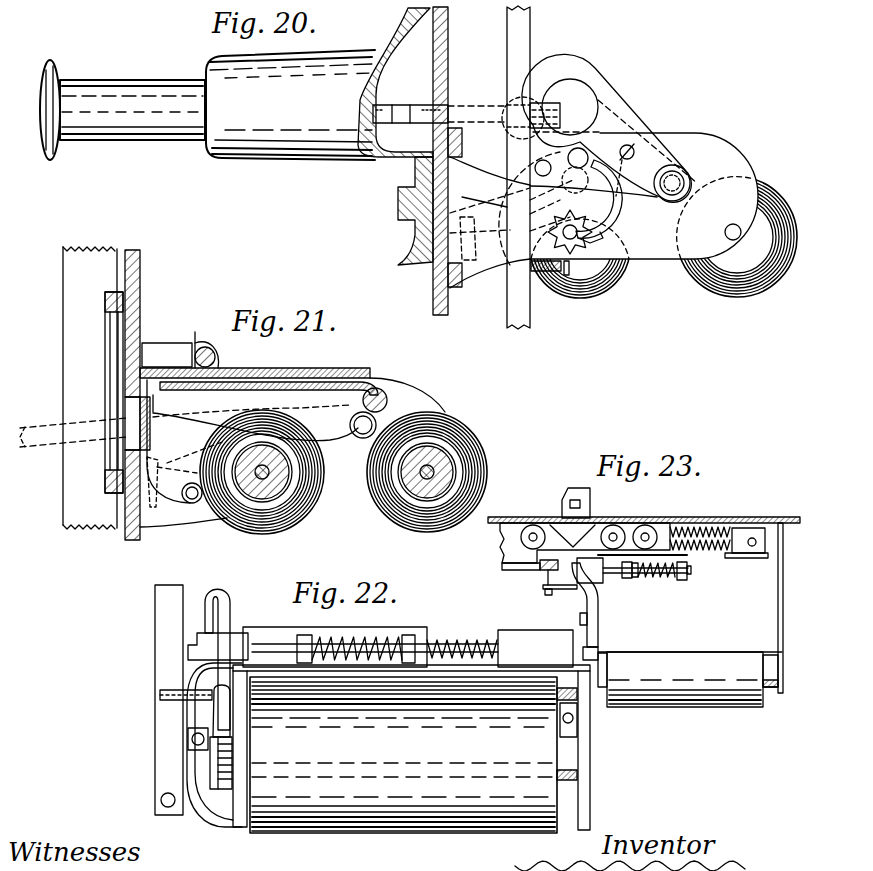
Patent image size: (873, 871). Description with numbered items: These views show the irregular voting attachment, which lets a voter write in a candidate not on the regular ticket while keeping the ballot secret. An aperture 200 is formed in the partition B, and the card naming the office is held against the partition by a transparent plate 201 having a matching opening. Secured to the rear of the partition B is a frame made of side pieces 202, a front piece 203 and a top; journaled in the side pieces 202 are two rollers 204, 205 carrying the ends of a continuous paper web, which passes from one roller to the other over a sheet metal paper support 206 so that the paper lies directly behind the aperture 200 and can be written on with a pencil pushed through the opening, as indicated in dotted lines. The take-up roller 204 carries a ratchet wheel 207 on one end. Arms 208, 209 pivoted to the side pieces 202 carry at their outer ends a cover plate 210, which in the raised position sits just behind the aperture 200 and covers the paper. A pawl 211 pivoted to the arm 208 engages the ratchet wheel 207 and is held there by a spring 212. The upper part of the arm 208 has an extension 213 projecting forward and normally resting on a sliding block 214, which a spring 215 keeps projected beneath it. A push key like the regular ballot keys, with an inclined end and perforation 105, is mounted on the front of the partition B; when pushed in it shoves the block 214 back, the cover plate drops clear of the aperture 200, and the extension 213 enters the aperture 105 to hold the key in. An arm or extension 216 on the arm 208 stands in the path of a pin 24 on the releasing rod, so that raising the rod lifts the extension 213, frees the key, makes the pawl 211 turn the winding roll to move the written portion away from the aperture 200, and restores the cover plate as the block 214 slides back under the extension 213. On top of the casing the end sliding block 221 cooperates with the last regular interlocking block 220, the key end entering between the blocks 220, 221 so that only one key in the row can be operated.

In FIG. 20, the projection 24 is at (518, 167).
In FIG. 22, the projection 24 is at (161, 800).
In FIG. 23, the projection 24 is at (546, 579).
In FIG. 20, the aperture 105 is at (404, 105).
In FIG. 23, the aperture 105 is at (581, 503).
In FIG. 21, the aperture 200 is at (130, 404).
In FIG. 21, the transparent plate 201 is at (110, 356).
In FIG. 20, the side pieces 202 is at (722, 146).
In FIG. 21, the side pieces 202 is at (415, 390).
In FIG. 22, the side pieces 202 is at (589, 751).
In FIG. 21, the front piece 203 is at (255, 365).
In FIG. 22, the front piece 203 is at (532, 668).
In FIG. 20, the take-up roller 204 is at (572, 290).
In FIG. 21, the take-up roller 204 is at (255, 503).
In FIG. 20, the roller 205 is at (716, 287).
In FIG. 21, the roller 205 is at (408, 503).
In FIG. 22, the roller 205 is at (403, 755).
In FIG. 21, the paper support 206 is at (273, 397).
In FIG. 20, the ratchet wheel 207 is at (577, 256).
In FIG. 20, the arm 208 is at (553, 208).
In FIG. 22, the arm 208 is at (225, 672).
In FIG. 21, the arm 209 is at (255, 423).
In FIG. 21, the cover plate 210 is at (138, 437).
In FIG. 20, the pawl 211 is at (622, 208).
In FIG. 22, the pawl 211 is at (213, 718).
In FIG. 20, the spring 212 is at (619, 173).
In FIG. 20, the extension 213 is at (595, 73).
In FIG. 22, the extension 213 is at (218, 600).
In FIG. 23, the extension 213 is at (587, 603).
In FIG. 20, the sliding block 214 is at (542, 109).
In FIG. 22, the sliding block 214 is at (239, 633).
In FIG. 23, the sliding block 214 is at (597, 576).
In FIG. 22, the spring 215 is at (404, 635).
In FIG. 23, the spring 215 is at (657, 580).
In FIG. 20, the arm or extension 216 is at (544, 160).
In FIG. 22, the arm or extension 216 is at (160, 696).
In FIG. 23, the arm or extension 216 is at (546, 591).
In FIG. 23, the sliding block 220 is at (552, 530).
In FIG. 21, the end sliding block 221 is at (167, 349).
In FIG. 23, the end sliding block 221 is at (667, 530).
In FIG. 20, the partition B is at (449, 37).
In FIG. 21, the partition B is at (128, 528).
In FIG. 23, the partition B is at (644, 512).